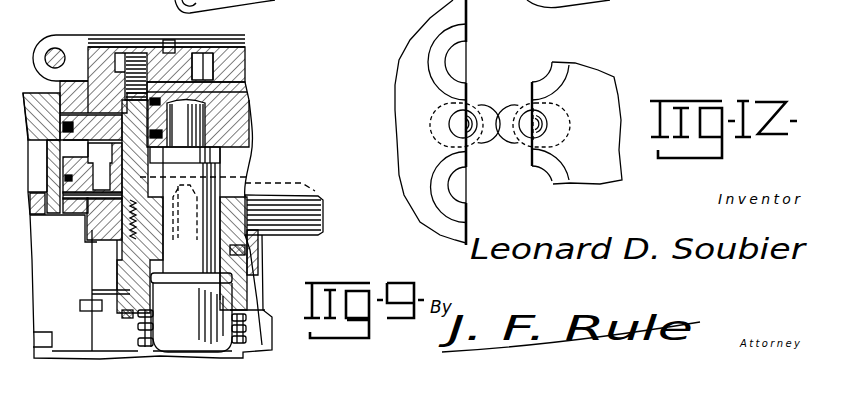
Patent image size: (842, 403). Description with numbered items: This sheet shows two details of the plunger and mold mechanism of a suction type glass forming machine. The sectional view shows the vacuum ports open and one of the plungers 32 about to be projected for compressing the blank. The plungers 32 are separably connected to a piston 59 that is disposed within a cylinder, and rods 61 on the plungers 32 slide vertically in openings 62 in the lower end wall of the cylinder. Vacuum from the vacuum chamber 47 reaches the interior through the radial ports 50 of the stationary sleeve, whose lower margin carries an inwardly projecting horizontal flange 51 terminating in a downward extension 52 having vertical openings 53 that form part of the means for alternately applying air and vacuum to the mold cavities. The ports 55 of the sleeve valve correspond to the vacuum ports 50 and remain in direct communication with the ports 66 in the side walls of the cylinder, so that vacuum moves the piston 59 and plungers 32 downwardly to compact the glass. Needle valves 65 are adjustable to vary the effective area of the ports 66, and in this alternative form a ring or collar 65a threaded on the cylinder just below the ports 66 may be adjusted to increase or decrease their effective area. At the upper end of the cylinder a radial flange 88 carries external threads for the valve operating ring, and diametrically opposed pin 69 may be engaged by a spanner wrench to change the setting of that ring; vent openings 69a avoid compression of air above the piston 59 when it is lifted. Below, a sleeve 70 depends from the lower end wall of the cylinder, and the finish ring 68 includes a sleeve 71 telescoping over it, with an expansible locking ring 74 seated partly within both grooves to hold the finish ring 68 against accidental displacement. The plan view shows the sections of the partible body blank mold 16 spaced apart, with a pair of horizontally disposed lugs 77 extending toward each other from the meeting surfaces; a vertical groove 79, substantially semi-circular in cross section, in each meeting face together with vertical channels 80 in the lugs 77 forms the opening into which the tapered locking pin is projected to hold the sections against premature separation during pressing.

In FIG. 12, the partible body blank mold 16 is at (399, 96).
In FIG. 9, the plunger 32 is at (192, 317).
In FIG. 9, the vacuum chamber 47 is at (66, 200).
In FIG. 9, the radial ports 50 is at (58, 151).
In FIG. 9, the horizontal flange 51 is at (72, 215).
In FIG. 9, the downward extension 52 is at (85, 232).
In FIG. 9, the vertical openings 53 is at (105, 273).
In FIG. 9, the ports 55 is at (92, 176).
In FIG. 9, the piston 59 is at (249, 102).
In FIG. 9, the rods 61 is at (182, 179).
In FIG. 9, the openings 62 is at (226, 196).
In FIG. 9, the needle valves 65 is at (128, 210).
In FIG. 9, the ring or collar 65a is at (323, 201).
In FIG. 9, the ports 66 is at (142, 192).
In FIG. 9, the finish ring 68 is at (130, 313).
In FIG. 9, the pin 69 is at (168, 44).
In FIG. 9, the vent openings 69a is at (205, 53).
In FIG. 9, the sleeve 70 is at (155, 280).
In FIG. 9, the sleeve 71 is at (130, 263).
In FIG. 9, the expansible locking ring 74 is at (225, 250).
In FIG. 12, the lugs 77 is at (510, 106).
In FIG. 12, the vertical groove 79 is at (542, 121).
In FIG. 12, the vertical channels 80 is at (478, 132).
In FIG. 9, the radial flange 88 is at (100, 60).